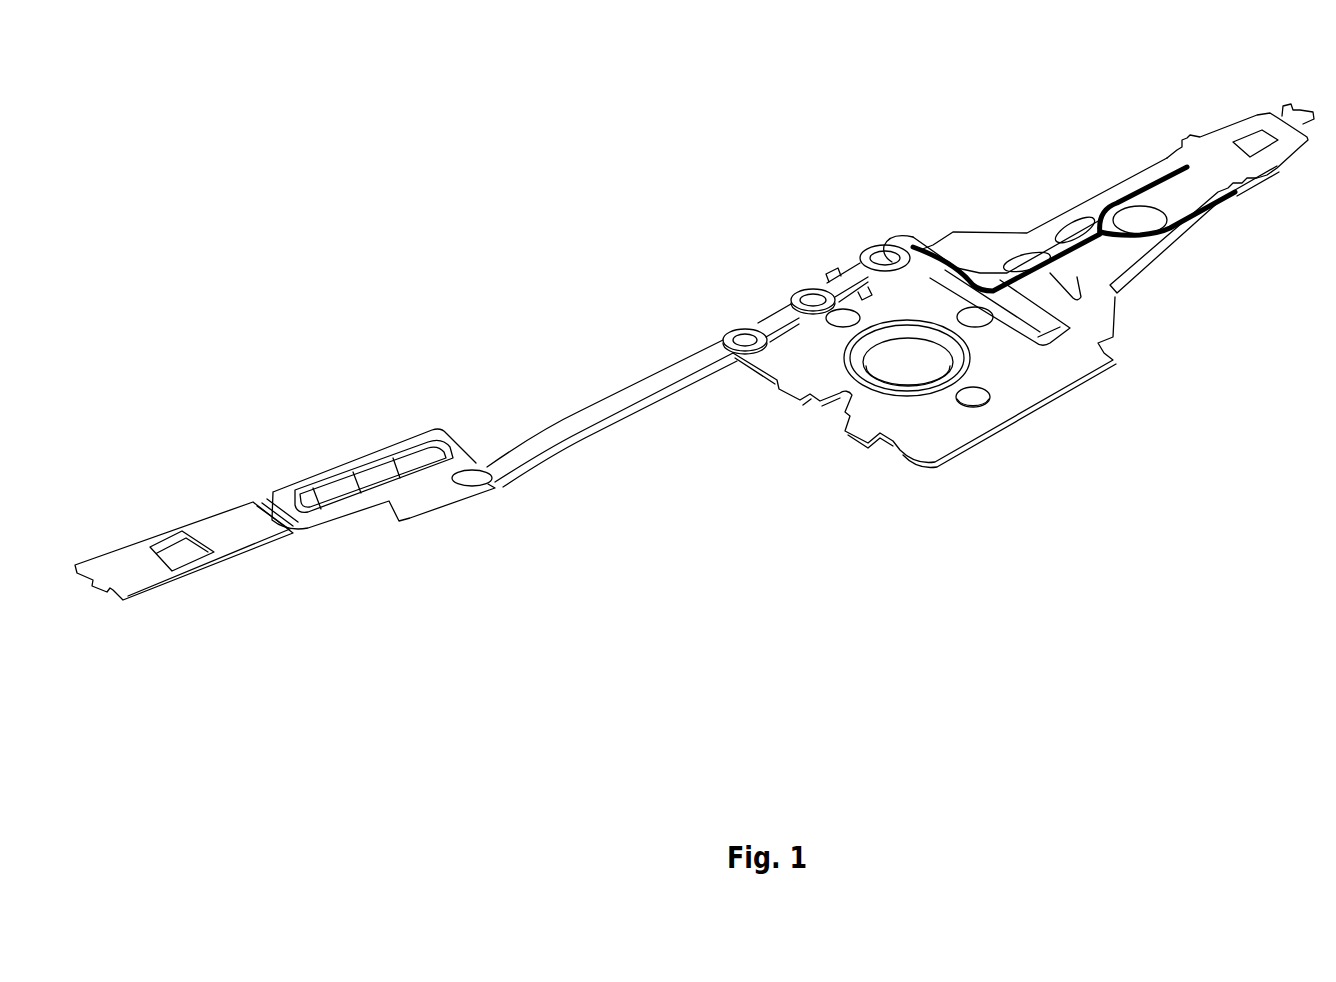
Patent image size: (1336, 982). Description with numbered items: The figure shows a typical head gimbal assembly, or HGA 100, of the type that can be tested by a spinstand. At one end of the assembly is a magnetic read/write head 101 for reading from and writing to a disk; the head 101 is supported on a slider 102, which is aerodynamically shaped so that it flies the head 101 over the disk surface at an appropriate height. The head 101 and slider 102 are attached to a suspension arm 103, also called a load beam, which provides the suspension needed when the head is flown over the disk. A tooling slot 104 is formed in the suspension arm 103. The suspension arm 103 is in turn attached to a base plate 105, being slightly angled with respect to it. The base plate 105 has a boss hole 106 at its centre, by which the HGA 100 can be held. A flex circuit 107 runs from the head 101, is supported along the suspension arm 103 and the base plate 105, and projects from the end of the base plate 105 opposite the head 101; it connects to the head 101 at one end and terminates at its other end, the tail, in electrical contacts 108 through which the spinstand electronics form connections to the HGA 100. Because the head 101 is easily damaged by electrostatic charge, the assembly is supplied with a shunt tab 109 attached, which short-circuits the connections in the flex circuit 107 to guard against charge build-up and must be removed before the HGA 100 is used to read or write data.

The head gimbal assembly 100 is at (1152, 463).
The magnetic read/write head 101 is at (1255, 146).
The slider 102 is at (1285, 142).
The suspension arm 103 is at (1145, 242).
The tooling slot 104 is at (1137, 222).
The base plate 105 is at (942, 422).
The boss hole 106 is at (905, 368).
The flex circuit 107 is at (557, 438).
The electrical contacts 108 is at (360, 485).
The shunt tab 109 is at (178, 549).